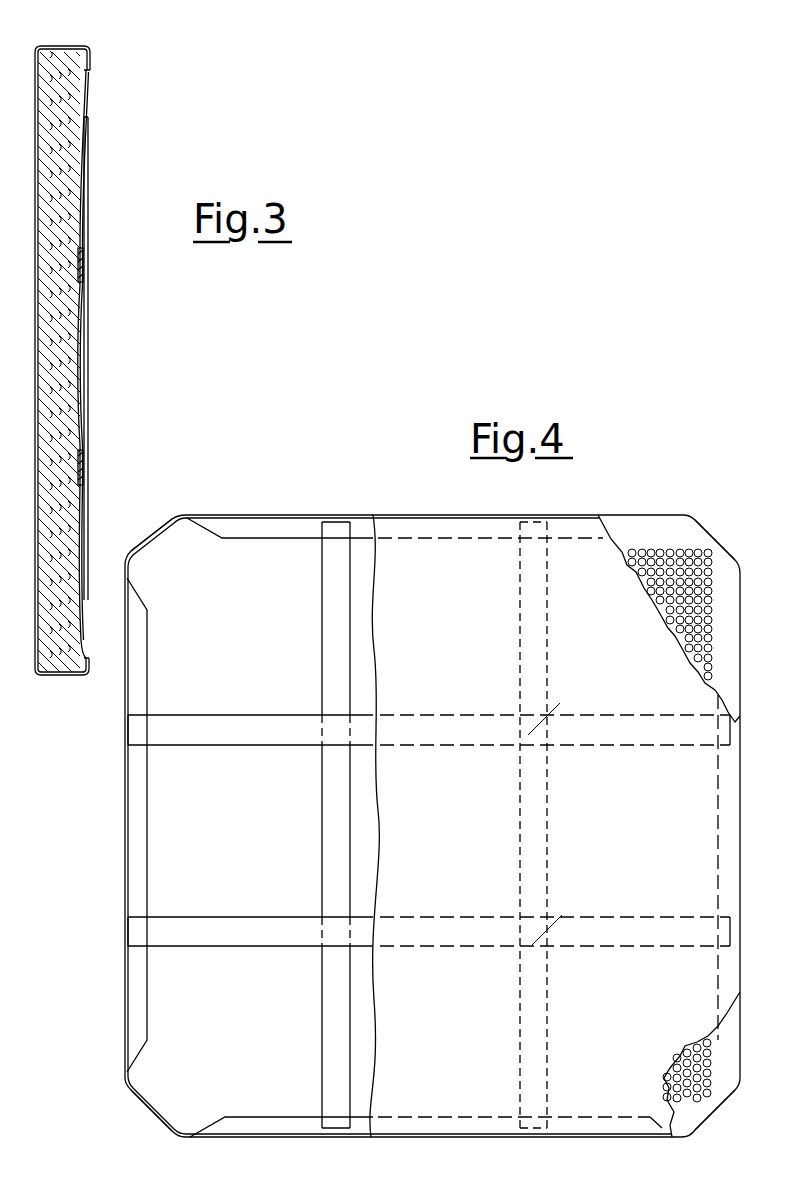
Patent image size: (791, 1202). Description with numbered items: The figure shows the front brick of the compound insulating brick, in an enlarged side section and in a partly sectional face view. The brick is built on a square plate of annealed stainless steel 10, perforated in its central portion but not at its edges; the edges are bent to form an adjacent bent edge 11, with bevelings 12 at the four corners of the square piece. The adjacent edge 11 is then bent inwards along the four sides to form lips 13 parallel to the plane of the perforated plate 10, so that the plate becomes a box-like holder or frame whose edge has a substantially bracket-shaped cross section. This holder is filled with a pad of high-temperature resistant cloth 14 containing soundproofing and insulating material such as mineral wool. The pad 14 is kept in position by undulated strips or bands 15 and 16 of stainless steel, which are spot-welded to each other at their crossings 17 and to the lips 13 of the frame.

In FIG. 3, the perforated plate of annealed stainless steel 10 is at (75, 369).
In FIG. 4, the perforated plate of annealed stainless steel 10 is at (430, 824).
In FIG. 3, the adjacent bent edge 11 is at (71, 47).
In FIG. 4, the adjacent bent edge 11 is at (241, 515).
In FIG. 4, the bevelings 12 is at (150, 532).
In FIG. 3, the lips 13 is at (91, 62).
In FIG. 4, the lips 13 is at (243, 533).
In FIG. 3, the pad of high-temperature resistant cloth 14 is at (62, 207).
In FIG. 4, the pad of high-temperature resistant cloth 14 is at (472, 556).
In FIG. 3, the undulated strip of stainless steel 15 is at (83, 266).
In FIG. 4, the undulated strip of stainless steel 15 is at (228, 728).
In FIG. 3, the undulated strip of stainless steel 16 is at (80, 345).
In FIG. 4, the undulated strip of stainless steel 16 is at (341, 562).
In FIG. 4, the crossings 17 is at (335, 725).